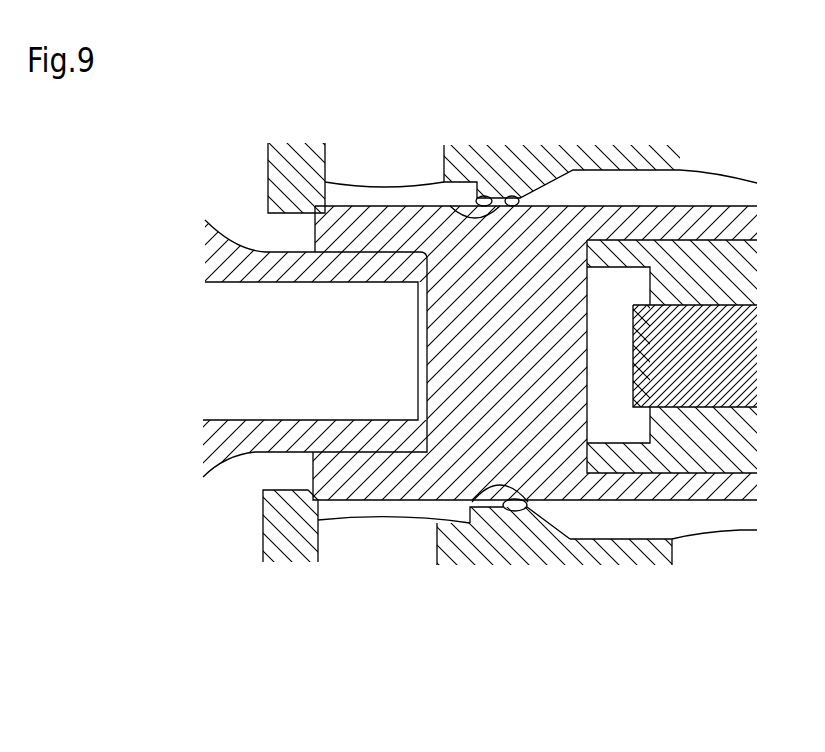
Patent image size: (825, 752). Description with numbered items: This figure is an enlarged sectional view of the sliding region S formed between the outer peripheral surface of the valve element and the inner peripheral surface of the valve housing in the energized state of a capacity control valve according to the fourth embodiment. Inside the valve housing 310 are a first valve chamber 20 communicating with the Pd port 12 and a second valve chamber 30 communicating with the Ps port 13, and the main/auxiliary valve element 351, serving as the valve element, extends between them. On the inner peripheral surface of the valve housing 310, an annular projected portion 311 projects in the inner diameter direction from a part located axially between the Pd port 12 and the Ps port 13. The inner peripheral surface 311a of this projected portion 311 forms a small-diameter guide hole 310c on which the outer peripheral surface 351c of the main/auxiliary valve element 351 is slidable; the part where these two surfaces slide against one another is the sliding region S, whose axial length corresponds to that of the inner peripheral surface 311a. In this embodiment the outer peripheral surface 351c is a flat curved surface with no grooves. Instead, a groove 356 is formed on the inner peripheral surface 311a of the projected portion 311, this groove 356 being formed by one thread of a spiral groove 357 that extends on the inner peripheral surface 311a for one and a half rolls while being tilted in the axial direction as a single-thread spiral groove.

The Pd port 12 is at (331, 158).
The Ps port 13 is at (682, 170).
The first valve chamber 20 is at (424, 198).
The second valve chamber 30 is at (617, 193).
The valve housing 310 is at (378, 387).
The guide hole 310c is at (486, 515).
The projected portion 311 is at (422, 516).
The inner peripheral surface 311a is at (528, 502).
The main/auxiliary valve element 351 is at (609, 600).
The outer peripheral surface 351c is at (628, 503).
The groove 356 is at (476, 183).
The spiral groove 357 is at (493, 203).
The sliding region S is at (480, 500).